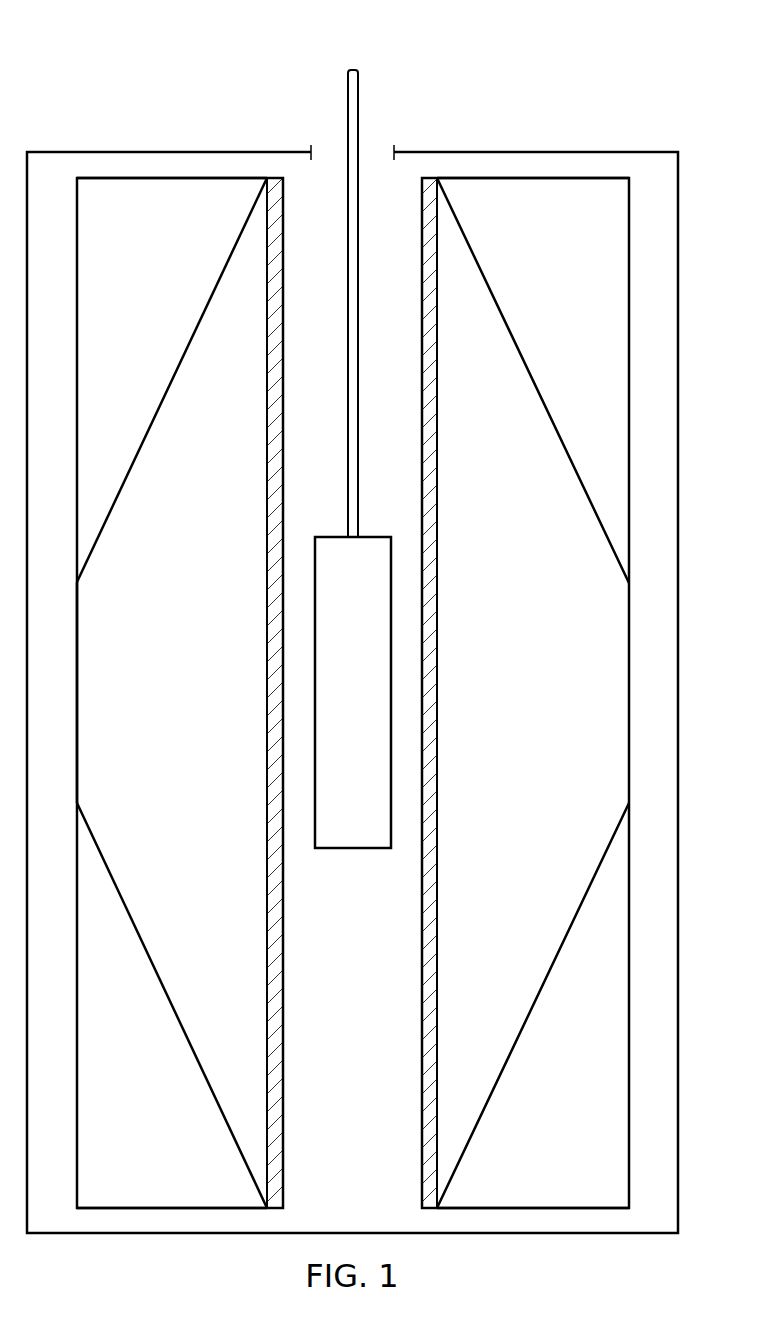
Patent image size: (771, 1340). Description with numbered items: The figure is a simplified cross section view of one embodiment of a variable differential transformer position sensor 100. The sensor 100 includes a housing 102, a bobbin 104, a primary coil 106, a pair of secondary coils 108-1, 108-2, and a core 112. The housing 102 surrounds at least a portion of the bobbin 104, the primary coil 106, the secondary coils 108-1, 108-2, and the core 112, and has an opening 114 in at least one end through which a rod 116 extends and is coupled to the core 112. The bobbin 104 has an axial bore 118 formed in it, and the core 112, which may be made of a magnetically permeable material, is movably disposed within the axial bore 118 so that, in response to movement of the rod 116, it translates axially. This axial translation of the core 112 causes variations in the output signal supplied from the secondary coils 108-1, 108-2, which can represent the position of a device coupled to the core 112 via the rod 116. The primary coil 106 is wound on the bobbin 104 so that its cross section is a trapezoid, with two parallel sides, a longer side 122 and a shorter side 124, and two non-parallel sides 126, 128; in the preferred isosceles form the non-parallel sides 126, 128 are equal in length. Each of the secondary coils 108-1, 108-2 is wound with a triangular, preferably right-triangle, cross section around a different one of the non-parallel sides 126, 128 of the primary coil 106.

The variable differential transformer position sensor 100 is at (620, 98).
The housing 102 is at (678, 348).
The bobbin 104 is at (432, 178).
The primary coil 106 is at (159, 705).
The secondary coil 108-1 is at (135, 234).
The secondary coil 108-2 is at (135, 1179).
The core 112 is at (352, 850).
The opening 114 is at (382, 137).
The rod 116 is at (348, 118).
The axial bore 118 is at (295, 423).
The longer side 122 is at (268, 795).
The shorter side 124 is at (77, 705).
The non-parallel side 126 is at (152, 430).
The non-parallel side 128 is at (152, 960).